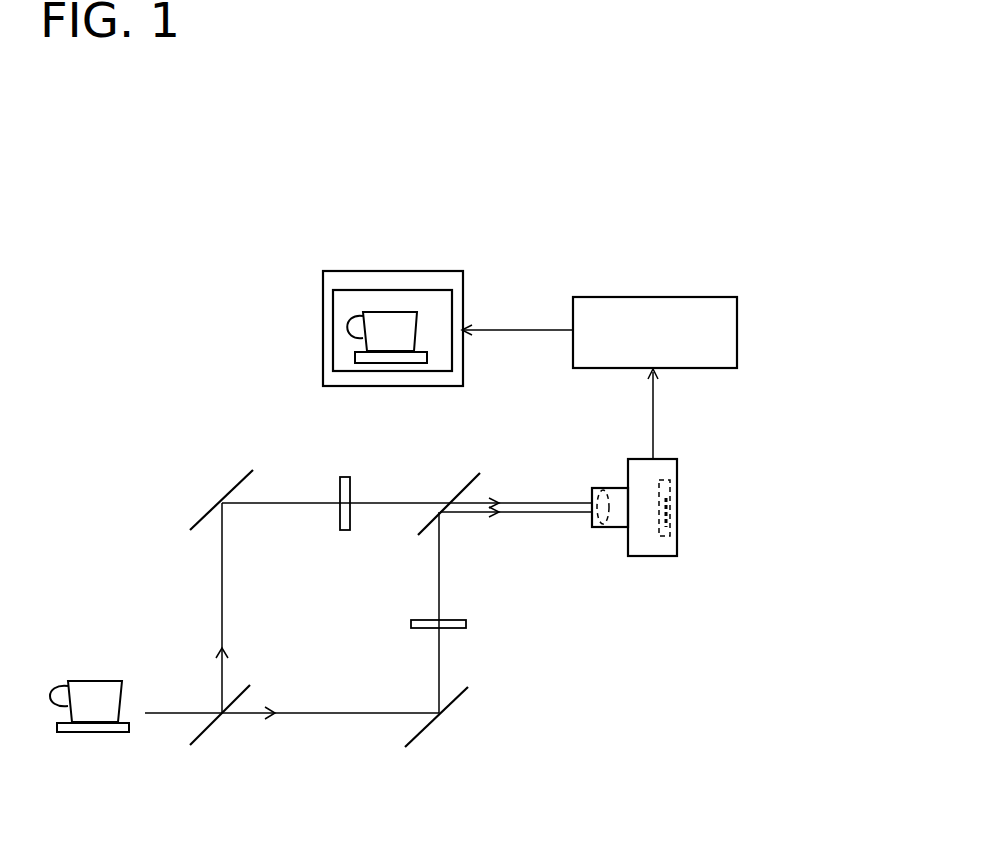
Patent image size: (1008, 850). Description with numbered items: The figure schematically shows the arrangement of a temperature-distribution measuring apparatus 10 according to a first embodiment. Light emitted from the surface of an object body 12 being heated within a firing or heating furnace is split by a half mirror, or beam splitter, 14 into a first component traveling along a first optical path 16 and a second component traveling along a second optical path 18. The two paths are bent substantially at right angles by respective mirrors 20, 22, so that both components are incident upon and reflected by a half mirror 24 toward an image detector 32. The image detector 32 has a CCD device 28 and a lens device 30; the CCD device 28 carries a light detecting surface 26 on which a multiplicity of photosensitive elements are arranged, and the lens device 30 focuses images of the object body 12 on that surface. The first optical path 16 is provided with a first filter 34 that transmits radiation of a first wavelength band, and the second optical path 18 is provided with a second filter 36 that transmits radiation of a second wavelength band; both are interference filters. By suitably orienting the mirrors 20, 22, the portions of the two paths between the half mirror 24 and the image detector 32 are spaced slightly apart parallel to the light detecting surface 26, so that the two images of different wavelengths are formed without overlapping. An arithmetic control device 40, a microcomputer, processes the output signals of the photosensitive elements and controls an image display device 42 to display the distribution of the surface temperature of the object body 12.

The temperature-distribution measuring apparatus 10 is at (172, 364).
The object body 12 is at (90, 690).
The half mirror (beam splitter) 14 is at (212, 727).
The first optical path 16 is at (223, 610).
The second optical path 18 is at (349, 715).
The mirror 20 is at (240, 487).
The mirror 22 is at (463, 695).
The half mirror 24 is at (425, 523).
The light detecting surface 26 is at (658, 525).
The CCD device 28 is at (673, 500).
The lens device 30 is at (590, 497).
The image detector 32 is at (670, 543).
The first filter 34 is at (342, 490).
The second filter 36 is at (466, 625).
The arithmetic control device 40 is at (668, 307).
The image display device 42 is at (445, 271).